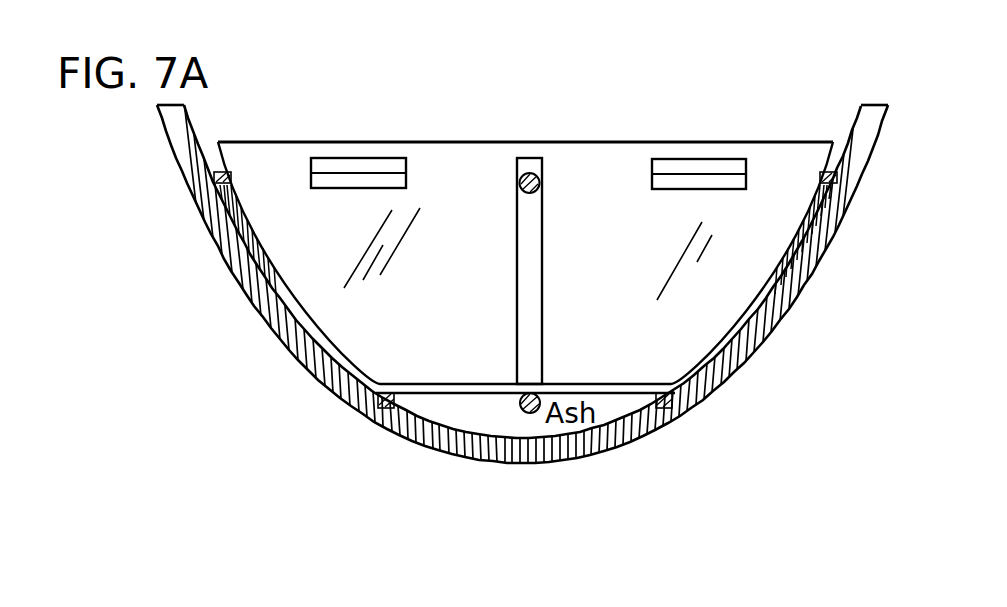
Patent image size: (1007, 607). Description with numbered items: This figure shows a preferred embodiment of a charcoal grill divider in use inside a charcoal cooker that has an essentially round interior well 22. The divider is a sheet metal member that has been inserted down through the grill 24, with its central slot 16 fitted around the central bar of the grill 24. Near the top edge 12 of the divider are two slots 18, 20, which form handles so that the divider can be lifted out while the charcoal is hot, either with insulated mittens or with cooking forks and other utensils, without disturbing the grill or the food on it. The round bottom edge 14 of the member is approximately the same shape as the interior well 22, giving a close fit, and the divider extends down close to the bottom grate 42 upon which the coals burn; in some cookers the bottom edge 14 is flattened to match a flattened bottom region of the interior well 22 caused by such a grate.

The top edge 12 is at (775, 141).
The round bottom edge 14 is at (598, 384).
The central slot 16 is at (521, 352).
The slot 18 is at (378, 157).
The slot 20 is at (700, 160).
The interior well 22 is at (211, 233).
The grill 24 is at (531, 102).
The bottom grate 42 is at (428, 396).